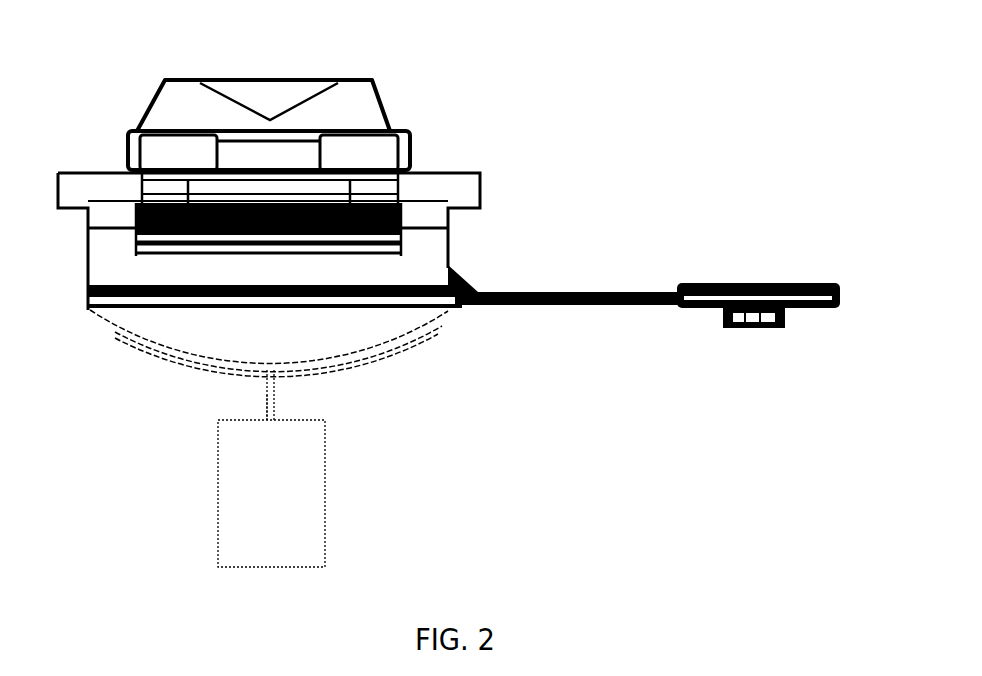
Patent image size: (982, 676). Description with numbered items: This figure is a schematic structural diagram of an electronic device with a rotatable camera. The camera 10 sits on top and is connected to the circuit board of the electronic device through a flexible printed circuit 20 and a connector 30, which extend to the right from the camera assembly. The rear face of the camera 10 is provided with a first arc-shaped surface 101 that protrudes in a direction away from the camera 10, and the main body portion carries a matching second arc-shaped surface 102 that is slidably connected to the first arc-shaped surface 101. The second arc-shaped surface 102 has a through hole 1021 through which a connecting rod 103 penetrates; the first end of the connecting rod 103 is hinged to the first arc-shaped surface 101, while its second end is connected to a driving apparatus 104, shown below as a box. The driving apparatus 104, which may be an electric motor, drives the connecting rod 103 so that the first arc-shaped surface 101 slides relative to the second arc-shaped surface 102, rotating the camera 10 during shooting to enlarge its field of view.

The camera 10 is at (350, 103).
The flexible printed circuit 20 is at (545, 292).
The connector 30 is at (740, 283).
The first arc-shaped surface 101 is at (440, 320).
The second arc-shaped surface 102 is at (390, 350).
The through hole 1021 is at (280, 386).
The connecting rod 103 is at (265, 412).
The driving apparatus 104 is at (218, 492).